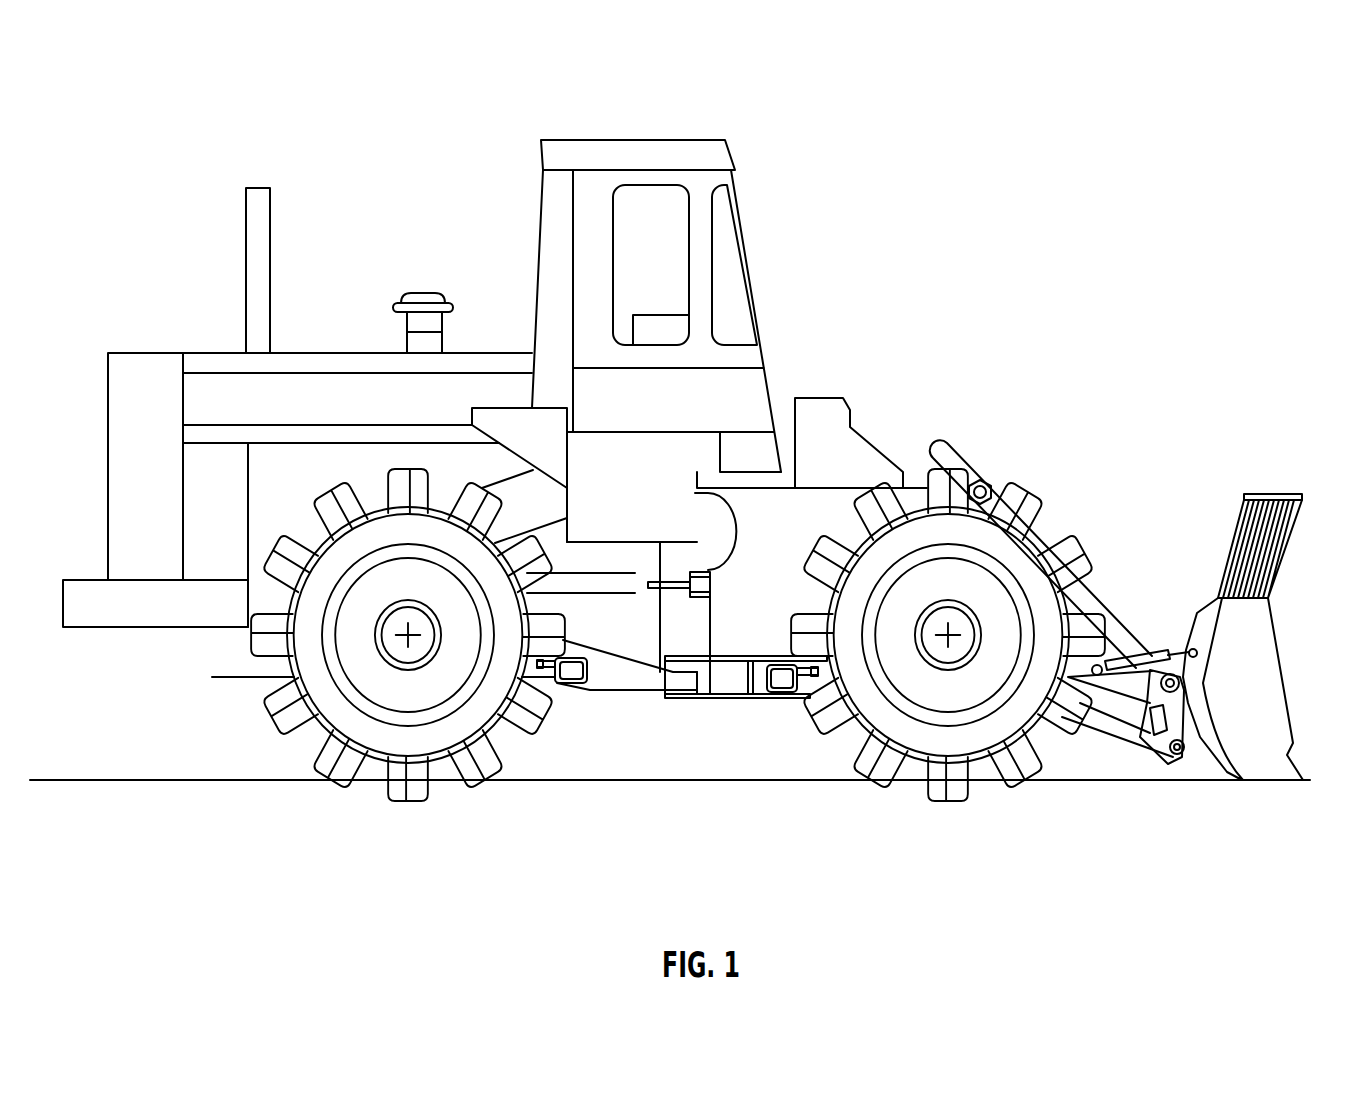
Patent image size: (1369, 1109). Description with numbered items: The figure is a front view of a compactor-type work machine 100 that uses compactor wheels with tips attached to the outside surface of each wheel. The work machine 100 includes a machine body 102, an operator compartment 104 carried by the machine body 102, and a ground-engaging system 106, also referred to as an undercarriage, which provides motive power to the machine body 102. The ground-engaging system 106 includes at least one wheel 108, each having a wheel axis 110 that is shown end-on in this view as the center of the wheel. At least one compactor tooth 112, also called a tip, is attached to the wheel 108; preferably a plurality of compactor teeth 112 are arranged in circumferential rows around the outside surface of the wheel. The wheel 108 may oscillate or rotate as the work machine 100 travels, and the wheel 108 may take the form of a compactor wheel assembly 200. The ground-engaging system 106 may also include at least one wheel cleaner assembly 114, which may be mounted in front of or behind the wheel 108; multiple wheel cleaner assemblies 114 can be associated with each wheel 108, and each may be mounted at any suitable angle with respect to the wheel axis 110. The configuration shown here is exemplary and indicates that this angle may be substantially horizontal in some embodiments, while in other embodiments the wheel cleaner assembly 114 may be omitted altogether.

The work machine 100 is at (670, 462).
The machine body 102 is at (147, 628).
The operator compartment 104 is at (633, 140).
The ground-engaging system 106 is at (243, 714).
The wheel 108 is at (375, 745).
The compactor wheel assembly 200 is at (414, 742).
The wheel axis 110 is at (408, 635).
The compactor tooth 112 is at (523, 717).
The wheel cleaner assembly 114 is at (575, 690).